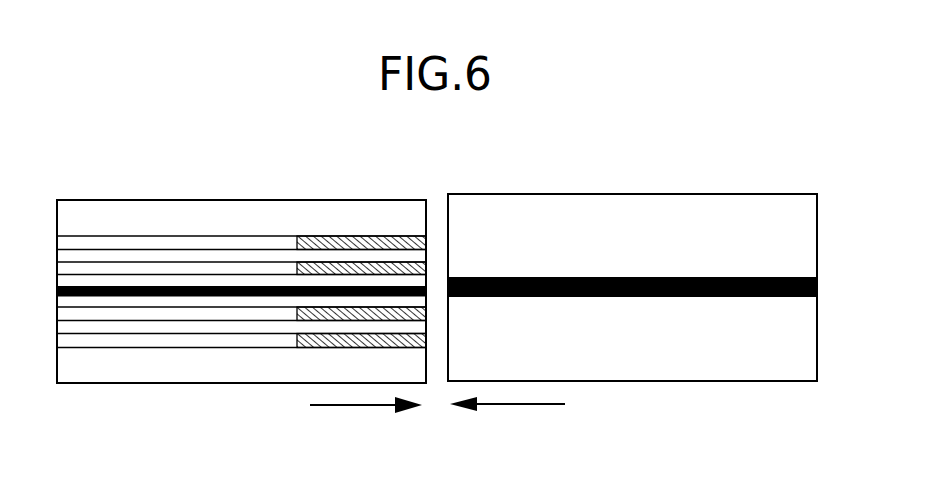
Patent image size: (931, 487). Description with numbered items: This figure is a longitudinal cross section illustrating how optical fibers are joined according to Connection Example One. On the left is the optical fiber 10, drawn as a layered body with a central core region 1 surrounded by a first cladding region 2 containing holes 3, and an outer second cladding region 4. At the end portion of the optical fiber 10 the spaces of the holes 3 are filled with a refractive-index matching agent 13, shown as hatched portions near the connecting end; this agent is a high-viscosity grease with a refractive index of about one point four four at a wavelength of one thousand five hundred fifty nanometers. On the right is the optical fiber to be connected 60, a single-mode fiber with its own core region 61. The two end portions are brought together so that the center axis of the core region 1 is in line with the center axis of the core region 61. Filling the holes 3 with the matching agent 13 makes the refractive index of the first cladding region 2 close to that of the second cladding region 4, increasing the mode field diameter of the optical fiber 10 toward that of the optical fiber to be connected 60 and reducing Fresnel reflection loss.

The optical fiber 10 is at (228, 200).
The holes 3 is at (163, 222).
The first cladding region 2 is at (190, 255).
The core region 1 is at (275, 285).
The second cladding region 4 is at (307, 215).
The refractive-index matching agent 13 is at (367, 237).
The optical fiber to be connected 60 is at (700, 194).
The core region 61 is at (578, 278).